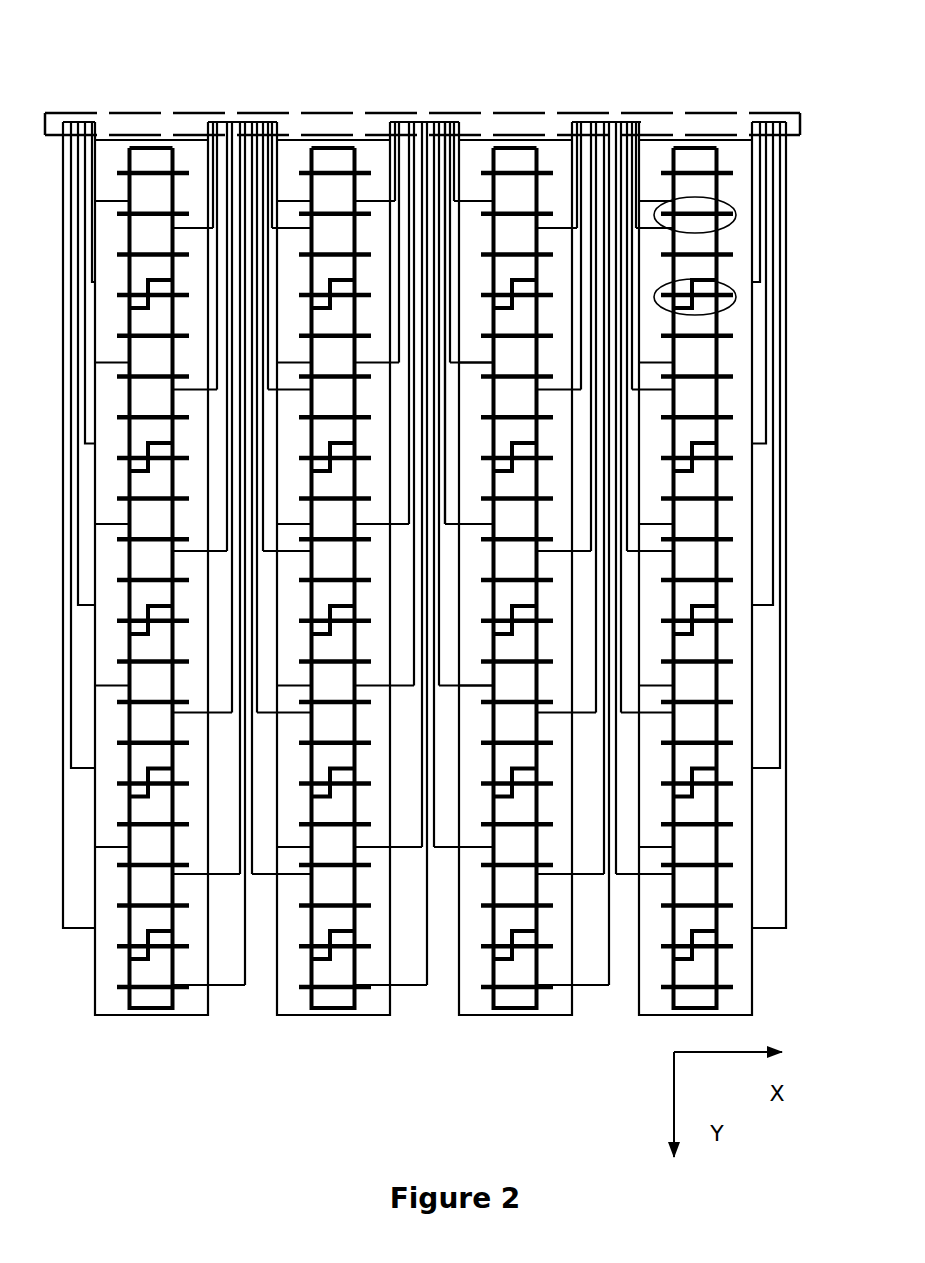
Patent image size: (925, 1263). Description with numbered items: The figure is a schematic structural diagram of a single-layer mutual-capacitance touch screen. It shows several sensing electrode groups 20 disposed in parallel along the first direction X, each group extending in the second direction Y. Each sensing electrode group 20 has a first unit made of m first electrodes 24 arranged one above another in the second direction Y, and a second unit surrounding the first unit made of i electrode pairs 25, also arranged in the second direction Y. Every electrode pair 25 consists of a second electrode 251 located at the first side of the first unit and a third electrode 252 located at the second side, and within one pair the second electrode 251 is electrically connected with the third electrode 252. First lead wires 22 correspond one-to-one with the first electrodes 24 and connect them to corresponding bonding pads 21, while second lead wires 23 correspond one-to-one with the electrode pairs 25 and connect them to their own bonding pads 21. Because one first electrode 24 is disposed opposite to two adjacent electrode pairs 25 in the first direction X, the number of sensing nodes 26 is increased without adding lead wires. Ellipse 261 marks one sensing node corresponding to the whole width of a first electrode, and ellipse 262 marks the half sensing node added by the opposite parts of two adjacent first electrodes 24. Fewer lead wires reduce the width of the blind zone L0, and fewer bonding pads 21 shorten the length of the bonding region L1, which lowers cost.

The sensing electrode group 20 is at (150, 566).
The bonding pad 21 is at (403, 120).
The first lead wire 22 is at (620, 162).
The second lead wire 23 is at (445, 156).
The first electrode 24 is at (514, 185).
The electrode pair 25 is at (151, 508).
The second electrode 251 is at (105, 162).
The third electrode 252 is at (192, 162).
The sensing node 26 is at (695, 162).
The ellipse 261 is at (735, 228).
The ellipse 262 is at (740, 303).
The width of a blind zone L0 is at (277, 120).
The length of a bonding region L1 is at (338, 110).